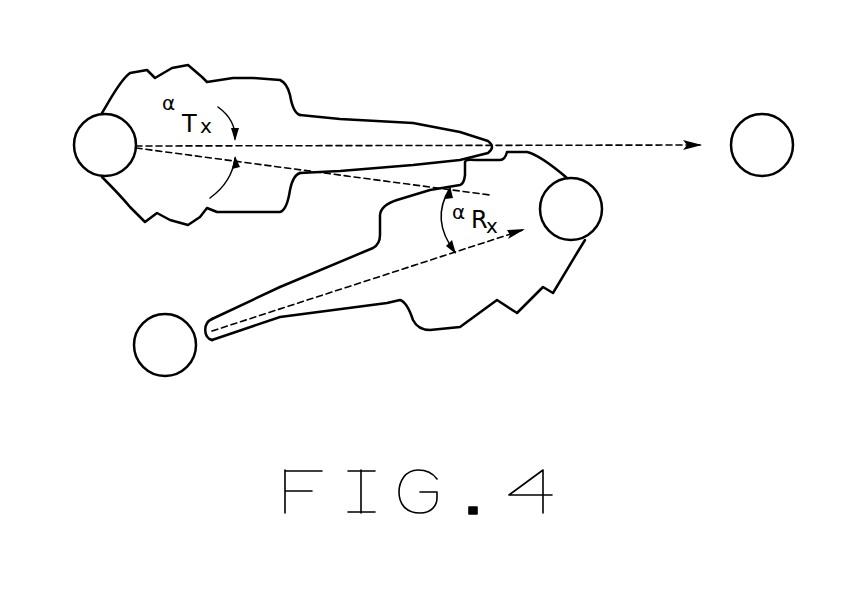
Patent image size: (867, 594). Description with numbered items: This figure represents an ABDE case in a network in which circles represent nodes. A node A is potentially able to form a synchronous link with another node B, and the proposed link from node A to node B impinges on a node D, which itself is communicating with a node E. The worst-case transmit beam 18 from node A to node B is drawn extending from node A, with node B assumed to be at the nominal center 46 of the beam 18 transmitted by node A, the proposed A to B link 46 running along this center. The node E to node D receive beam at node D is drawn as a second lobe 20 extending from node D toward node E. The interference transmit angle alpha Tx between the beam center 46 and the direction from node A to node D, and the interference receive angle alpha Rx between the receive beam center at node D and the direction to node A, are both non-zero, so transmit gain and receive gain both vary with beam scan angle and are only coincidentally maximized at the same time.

The transmit beam 18 is at (297, 140).
The nominal center of beam 46 is at (378, 141).
The receive antenna beam pattern 20 is at (462, 320).
The node A is at (74, 150).
The node B is at (793, 146).
The node D is at (602, 202).
The node E is at (134, 353).